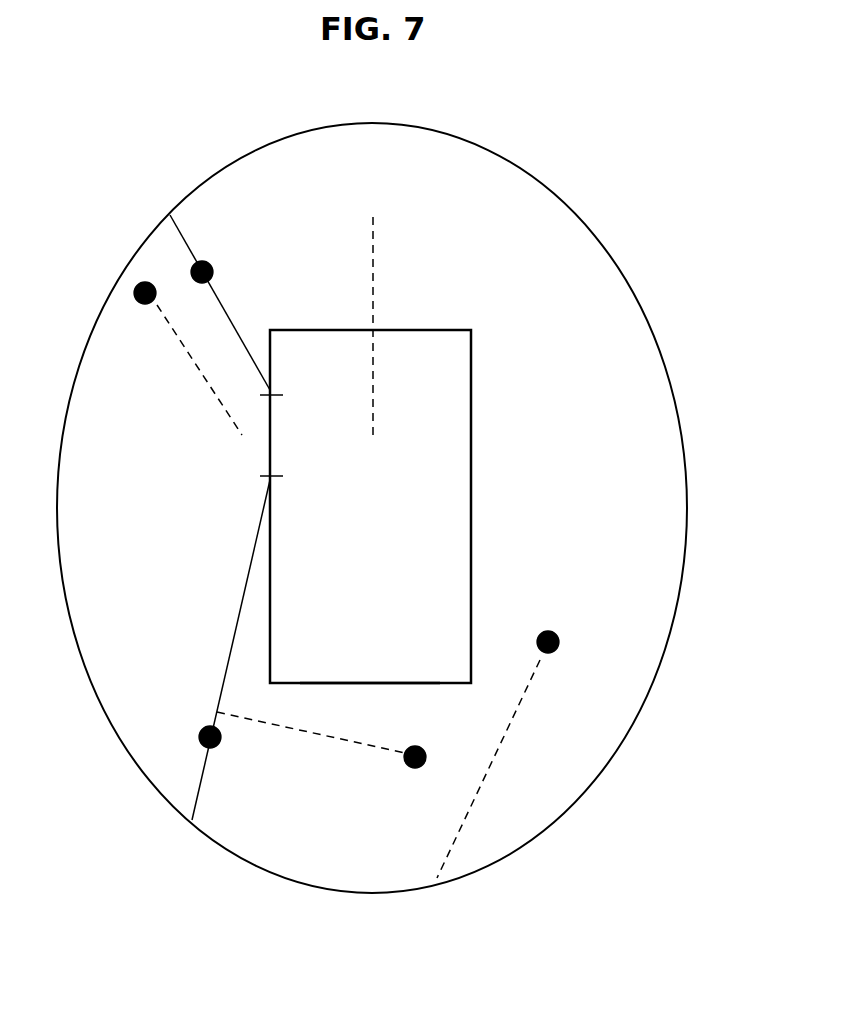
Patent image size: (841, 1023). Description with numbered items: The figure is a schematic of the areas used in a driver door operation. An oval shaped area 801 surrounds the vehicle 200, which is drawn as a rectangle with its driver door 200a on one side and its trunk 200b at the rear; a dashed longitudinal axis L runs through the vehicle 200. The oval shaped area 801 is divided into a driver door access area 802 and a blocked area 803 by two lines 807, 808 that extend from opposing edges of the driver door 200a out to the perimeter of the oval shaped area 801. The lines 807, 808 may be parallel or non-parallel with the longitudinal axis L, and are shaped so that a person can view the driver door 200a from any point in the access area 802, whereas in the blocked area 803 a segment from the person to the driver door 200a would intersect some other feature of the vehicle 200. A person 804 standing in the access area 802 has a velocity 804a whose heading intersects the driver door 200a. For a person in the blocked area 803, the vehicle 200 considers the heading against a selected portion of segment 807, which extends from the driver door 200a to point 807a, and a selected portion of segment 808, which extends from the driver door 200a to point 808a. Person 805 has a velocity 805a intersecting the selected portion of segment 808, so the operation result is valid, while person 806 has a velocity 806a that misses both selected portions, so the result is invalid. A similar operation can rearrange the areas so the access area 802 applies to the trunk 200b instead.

The oval shaped area 801 is at (500, 157).
The vehicle 200 is at (370, 506).
The driver door 200a is at (274, 437).
The trunk 200b is at (364, 682).
The longitudinal axis L is at (375, 285).
The driver door access area 802 is at (146, 511).
The blocked area 803 is at (570, 511).
The person 804 is at (138, 302).
The velocity 804a is at (191, 357).
The person 805 is at (428, 755).
The velocity 805a is at (328, 740).
The person 806 is at (560, 644).
The velocity 806a is at (497, 752).
The line 807 is at (232, 322).
The point 807a is at (240, 250).
The line 808 is at (194, 812).
The point 808a is at (200, 736).